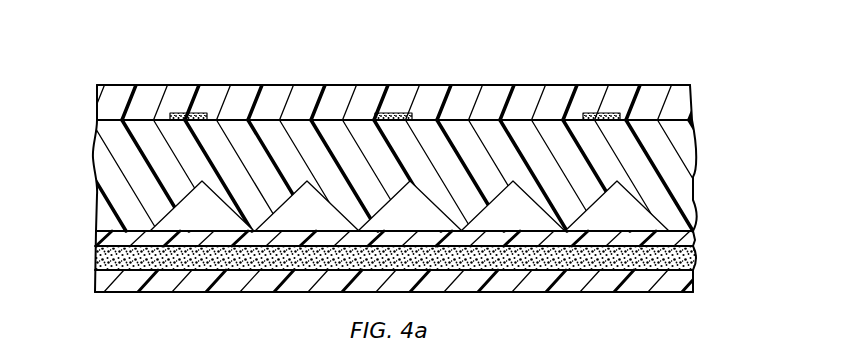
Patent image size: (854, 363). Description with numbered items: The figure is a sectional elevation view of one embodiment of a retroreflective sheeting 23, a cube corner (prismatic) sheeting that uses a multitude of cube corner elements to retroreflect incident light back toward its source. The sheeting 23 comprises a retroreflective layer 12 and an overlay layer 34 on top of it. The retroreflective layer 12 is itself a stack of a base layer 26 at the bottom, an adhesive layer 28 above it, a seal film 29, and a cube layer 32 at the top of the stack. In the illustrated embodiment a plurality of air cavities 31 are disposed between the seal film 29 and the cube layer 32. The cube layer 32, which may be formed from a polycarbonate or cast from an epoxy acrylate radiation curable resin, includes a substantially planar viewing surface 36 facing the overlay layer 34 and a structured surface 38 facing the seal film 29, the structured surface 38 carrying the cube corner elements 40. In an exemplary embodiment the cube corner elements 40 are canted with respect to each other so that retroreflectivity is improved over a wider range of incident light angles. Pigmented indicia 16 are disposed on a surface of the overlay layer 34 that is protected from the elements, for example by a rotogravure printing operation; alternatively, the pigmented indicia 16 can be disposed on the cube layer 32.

The sheeting 23 is at (652, 50).
The overlay layer 34 is at (83, 86).
The viewing surface 36 is at (115, 120).
The pigmented indicia 16 is at (186, 113).
The cube corner elements 40 is at (290, 196).
The retroreflective layer 12 is at (83, 126).
The cube layer 32 is at (663, 149).
The structured surface 38 is at (603, 202).
The air cavities 31 is at (646, 222).
The seal film 29 is at (695, 238).
The adhesive layer 28 is at (695, 263).
The base layer 26 is at (617, 293).